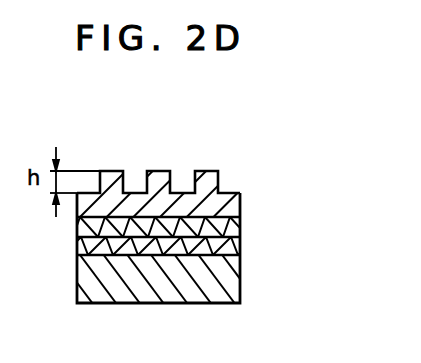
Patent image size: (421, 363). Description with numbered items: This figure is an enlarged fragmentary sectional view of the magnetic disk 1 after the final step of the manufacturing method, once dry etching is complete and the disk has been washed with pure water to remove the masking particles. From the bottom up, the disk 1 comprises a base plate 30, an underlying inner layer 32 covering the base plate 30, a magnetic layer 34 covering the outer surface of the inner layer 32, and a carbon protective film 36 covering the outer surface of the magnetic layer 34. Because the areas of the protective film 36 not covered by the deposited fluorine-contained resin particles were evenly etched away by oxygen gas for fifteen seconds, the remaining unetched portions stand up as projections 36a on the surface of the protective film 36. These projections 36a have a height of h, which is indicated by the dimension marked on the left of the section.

The magnetic disk 1 is at (180, 217).
The base plate 30 is at (240, 278).
The inner layer 32 is at (240, 243).
The magnetic layer 34 is at (240, 220).
The carbon protective film 36 is at (186, 159).
The projections 36a is at (203, 172).